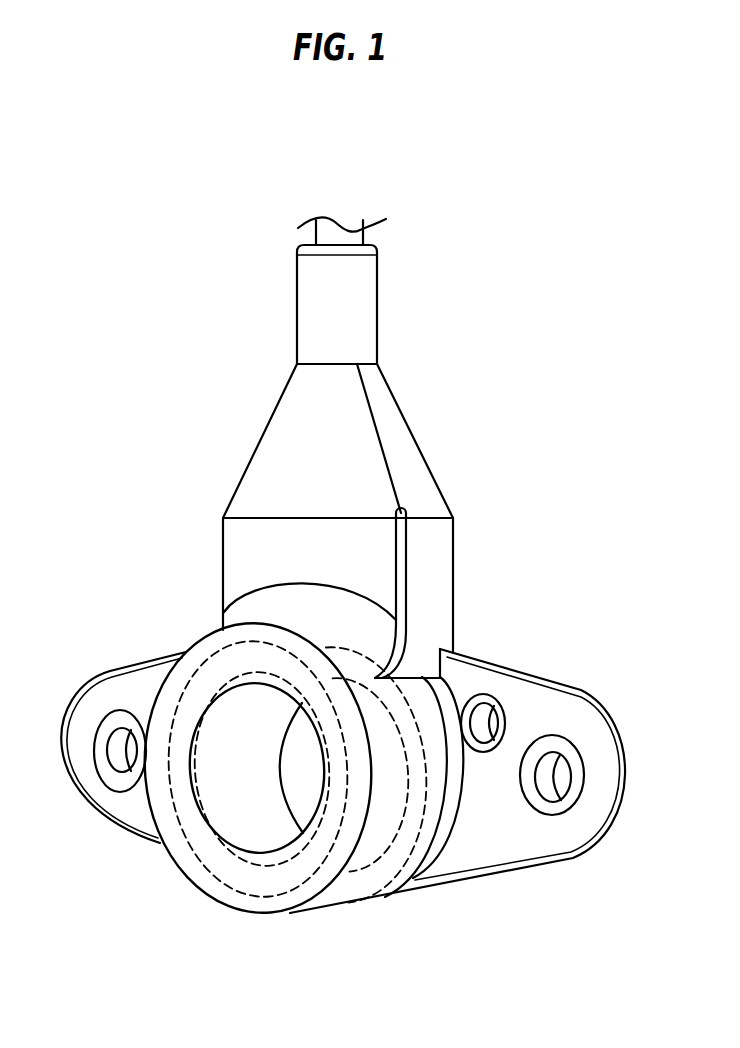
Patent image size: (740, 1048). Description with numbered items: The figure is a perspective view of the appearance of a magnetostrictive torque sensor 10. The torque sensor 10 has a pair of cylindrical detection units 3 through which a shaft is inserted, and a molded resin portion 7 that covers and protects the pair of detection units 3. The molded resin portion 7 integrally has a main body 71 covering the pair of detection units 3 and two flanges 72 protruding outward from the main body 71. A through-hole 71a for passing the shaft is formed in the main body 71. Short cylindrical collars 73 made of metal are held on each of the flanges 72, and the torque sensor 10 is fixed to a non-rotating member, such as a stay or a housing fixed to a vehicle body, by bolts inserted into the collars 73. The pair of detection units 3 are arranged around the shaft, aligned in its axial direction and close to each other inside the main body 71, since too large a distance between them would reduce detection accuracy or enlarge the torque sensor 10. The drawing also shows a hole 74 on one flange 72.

The torque sensor 10 is at (216, 229).
The molded resin portion 7 is at (433, 467).
The detection units 3 is at (388, 872).
The main body 71 is at (187, 868).
The through-hole 71a is at (243, 828).
The flanges 72 is at (115, 817).
The collars 73 is at (101, 733).
The mounting hole 74 is at (563, 810).